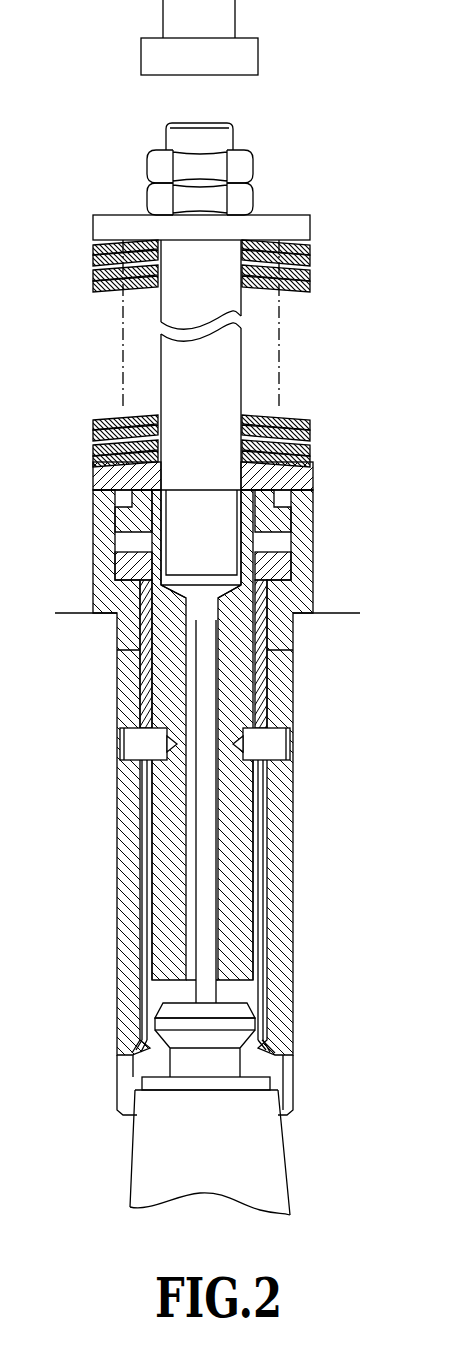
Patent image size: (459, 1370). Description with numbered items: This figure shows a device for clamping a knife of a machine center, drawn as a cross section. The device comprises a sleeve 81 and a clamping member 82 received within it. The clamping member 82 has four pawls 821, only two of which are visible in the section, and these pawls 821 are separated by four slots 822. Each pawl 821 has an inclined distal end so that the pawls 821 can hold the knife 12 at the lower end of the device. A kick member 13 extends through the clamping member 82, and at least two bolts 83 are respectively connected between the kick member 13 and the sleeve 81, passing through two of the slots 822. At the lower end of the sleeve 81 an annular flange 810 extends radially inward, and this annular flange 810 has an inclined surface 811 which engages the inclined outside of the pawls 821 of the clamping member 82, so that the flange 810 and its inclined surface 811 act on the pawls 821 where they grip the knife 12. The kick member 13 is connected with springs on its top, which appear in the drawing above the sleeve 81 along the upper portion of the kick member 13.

The knife 12 is at (163, 1051).
The kick member 13 is at (152, 746).
The sleeve 81 is at (230, 802).
The clamping member 82 is at (258, 654).
The bolt 83 is at (169, 745).
The annular flange 810 is at (253, 1060).
The inclined surface 811 is at (316, 1015).
The pawl 821 is at (87, 1024).
The slot 822 is at (260, 900).